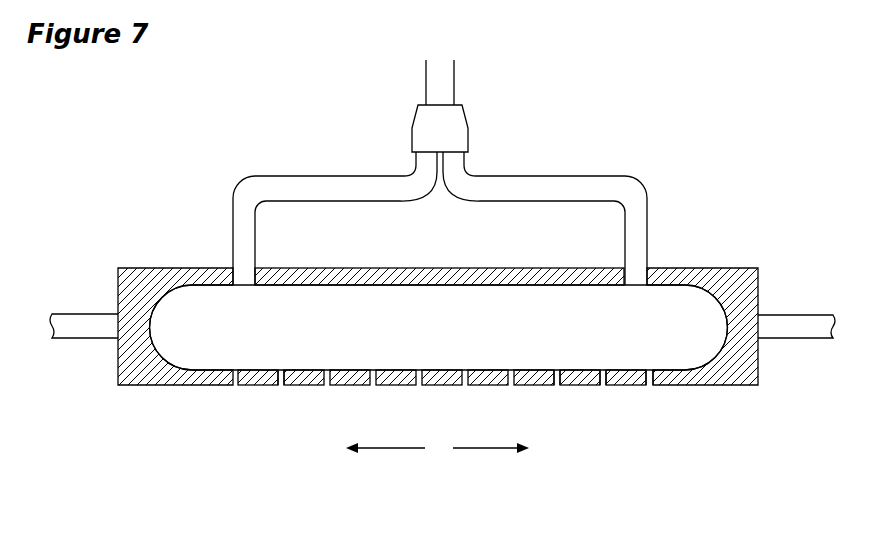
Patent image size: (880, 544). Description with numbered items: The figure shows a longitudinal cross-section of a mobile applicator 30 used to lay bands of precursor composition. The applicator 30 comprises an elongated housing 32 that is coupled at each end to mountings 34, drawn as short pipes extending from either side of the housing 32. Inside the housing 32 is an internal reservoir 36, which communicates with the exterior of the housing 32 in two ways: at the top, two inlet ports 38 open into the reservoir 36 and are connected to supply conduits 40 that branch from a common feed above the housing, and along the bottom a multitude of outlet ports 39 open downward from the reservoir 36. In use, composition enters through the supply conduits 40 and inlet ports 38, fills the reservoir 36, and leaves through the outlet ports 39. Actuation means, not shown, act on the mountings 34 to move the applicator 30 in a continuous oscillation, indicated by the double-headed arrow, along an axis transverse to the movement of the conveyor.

The applicator 30 is at (682, 146).
The elongated housing 32 is at (175, 386).
The mountings 34 is at (88, 314).
The internal reservoir 36 is at (419, 331).
The inlet ports 38 is at (233, 267).
The outlet ports 39 is at (651, 387).
The supply conduits 40 is at (248, 183).